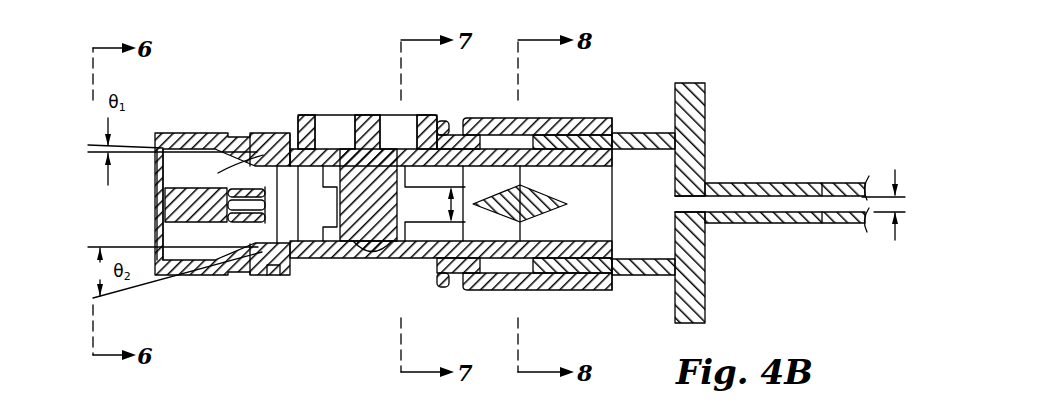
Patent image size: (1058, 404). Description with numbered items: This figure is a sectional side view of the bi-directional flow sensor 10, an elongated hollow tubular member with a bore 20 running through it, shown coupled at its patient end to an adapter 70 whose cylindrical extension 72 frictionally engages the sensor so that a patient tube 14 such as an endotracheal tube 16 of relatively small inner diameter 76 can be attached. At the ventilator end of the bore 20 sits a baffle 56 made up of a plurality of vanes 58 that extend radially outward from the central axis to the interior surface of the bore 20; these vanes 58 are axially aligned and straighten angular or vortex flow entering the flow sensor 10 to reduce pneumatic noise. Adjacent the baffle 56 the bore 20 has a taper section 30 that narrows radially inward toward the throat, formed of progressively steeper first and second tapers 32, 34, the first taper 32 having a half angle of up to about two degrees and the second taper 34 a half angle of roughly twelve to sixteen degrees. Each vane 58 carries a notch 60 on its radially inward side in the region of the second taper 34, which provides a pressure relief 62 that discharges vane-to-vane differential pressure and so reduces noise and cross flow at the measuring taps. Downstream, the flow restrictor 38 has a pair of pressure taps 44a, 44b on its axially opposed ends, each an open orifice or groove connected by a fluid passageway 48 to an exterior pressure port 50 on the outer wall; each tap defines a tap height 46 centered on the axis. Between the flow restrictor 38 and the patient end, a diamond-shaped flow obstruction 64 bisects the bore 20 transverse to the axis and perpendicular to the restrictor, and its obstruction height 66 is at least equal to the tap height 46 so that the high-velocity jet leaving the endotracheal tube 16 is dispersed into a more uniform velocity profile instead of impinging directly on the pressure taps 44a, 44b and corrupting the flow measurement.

The flow sensor 10 is at (228, 50).
The patient tube 14 is at (787, 233).
The endotracheal tube 16 is at (770, 225).
The bore 20 is at (598, 290).
The taper section 30 is at (275, 285).
The first taper 32 is at (218, 119).
The second taper 34 is at (218, 119).
The flow restrictor 38 is at (349, 256).
The pressure tap 44a is at (333, 200).
The pressure tap 44b is at (400, 200).
The tap height 46 is at (491, 252).
The fluid passageway 48 is at (345, 150).
The pressure port 50 is at (327, 120).
The baffle 56 is at (267, 133).
The vane 58 is at (180, 175).
The notch 60 is at (288, 148).
The pressure relief 62 is at (237, 222).
The flow obstruction 64 is at (569, 128).
The obstruction height 66 is at (447, 200).
The adapter 70 is at (730, 160).
The cylindrical extension 72 is at (638, 131).
The inner diameter 76 is at (895, 170).